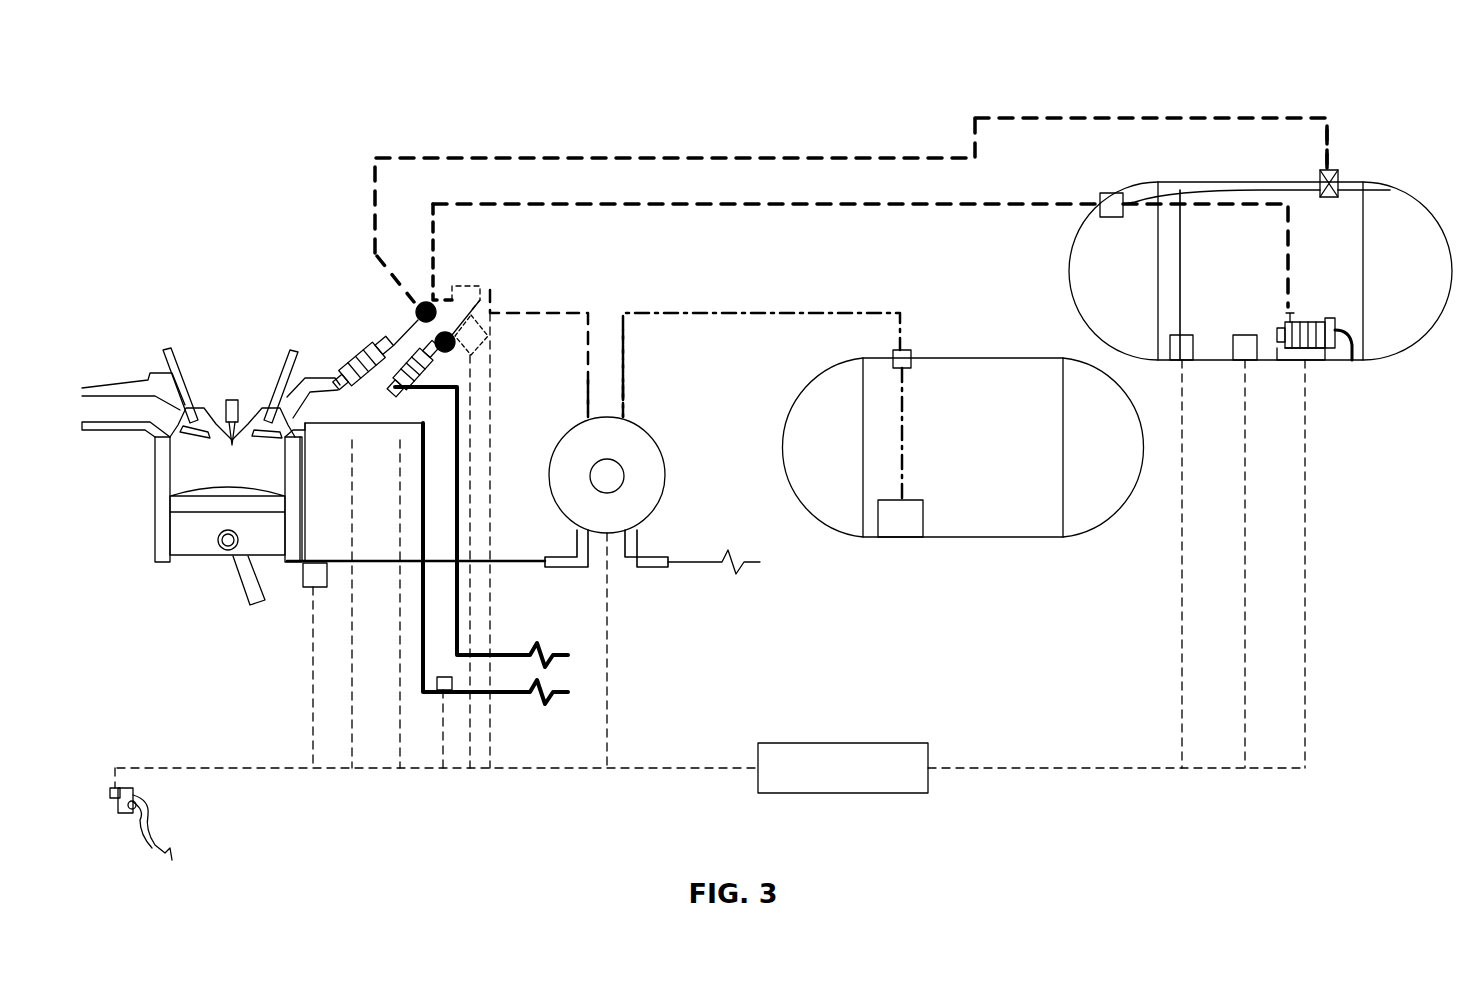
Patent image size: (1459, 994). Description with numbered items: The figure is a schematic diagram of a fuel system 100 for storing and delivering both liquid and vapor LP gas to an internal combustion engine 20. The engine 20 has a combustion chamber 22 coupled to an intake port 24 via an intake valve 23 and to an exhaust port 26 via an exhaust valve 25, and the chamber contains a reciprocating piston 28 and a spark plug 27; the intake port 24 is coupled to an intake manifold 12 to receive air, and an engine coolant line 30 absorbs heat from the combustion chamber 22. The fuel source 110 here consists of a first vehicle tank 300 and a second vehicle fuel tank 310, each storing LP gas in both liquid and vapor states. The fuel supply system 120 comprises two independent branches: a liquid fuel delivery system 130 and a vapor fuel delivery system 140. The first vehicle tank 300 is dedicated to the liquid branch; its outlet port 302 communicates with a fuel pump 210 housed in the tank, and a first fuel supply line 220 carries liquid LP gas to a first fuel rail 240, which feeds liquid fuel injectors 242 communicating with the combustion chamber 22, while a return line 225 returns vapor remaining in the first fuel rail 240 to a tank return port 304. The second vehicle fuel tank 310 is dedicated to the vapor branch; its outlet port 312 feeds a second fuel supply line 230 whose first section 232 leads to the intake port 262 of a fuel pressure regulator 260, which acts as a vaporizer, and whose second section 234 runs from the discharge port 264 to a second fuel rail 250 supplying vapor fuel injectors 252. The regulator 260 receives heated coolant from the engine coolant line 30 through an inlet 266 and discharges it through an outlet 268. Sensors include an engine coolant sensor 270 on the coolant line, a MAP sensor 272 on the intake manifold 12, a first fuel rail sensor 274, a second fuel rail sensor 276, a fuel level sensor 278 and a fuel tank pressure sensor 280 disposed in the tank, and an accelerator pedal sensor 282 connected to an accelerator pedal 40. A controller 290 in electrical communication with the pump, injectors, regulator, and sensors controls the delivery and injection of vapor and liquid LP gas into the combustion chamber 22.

The intake manifold 12 is at (548, 700).
The internal combustion engine 20 is at (119, 290).
The combustion chamber 22 is at (155, 480).
The intake valve 23 is at (290, 350).
The intake port 24 is at (310, 430).
The exhaust valve 25 is at (160, 350).
The exhaust port 26 is at (97, 385).
The spark plug 27 is at (228, 405).
The reciprocating piston 28 is at (195, 562).
The engine coolant line 30 is at (360, 560).
The accelerator pedal 40 is at (175, 845).
The fuel system 100 is at (1047, 79).
The fuel source 110 is at (1215, 519).
The fuel supply system 120 is at (366, 128).
The liquid fuel delivery system 130 is at (1327, 101).
The vapor fuel delivery system 140 is at (757, 575).
The fuel pump 210 is at (1308, 322).
The first fuel supply line 220 is at (625, 204).
The return line 225 is at (790, 155).
The second fuel supply line 230 is at (612, 300).
The first section of second fuel supply line 232 is at (795, 313).
The second section of second fuel supply line 234 is at (540, 312).
The first fuel rail 240 is at (415, 310).
The liquid fuel injector 242 is at (340, 358).
The second fuel rail 250 is at (450, 286).
The vapor fuel injector 252 is at (476, 502).
The fuel pressure regulator 260 is at (666, 478).
The intake port 262 is at (626, 418).
The discharge port 264 is at (586, 418).
The inlet 266 is at (557, 568).
The outlet 268 is at (650, 568).
The engine coolant sensor 270 is at (305, 590).
The absolute manifold pressure sensor 272 is at (440, 692).
The first fuel rail sensor 274 is at (440, 285).
The second fuel rail sensor 276 is at (492, 345).
The fuel level sensor 278 is at (1185, 335).
The fuel tank pressure sensor 280 is at (1247, 335).
The accelerator pedal sensor 282 is at (125, 788).
The controller 290 is at (845, 743).
The first vehicle tank 300 is at (1378, 362).
The outlet port 302 is at (1105, 193).
The tank return port 304 is at (1342, 180).
The second vehicle fuel tank 310 is at (970, 358).
The outlet port 312 is at (910, 350).